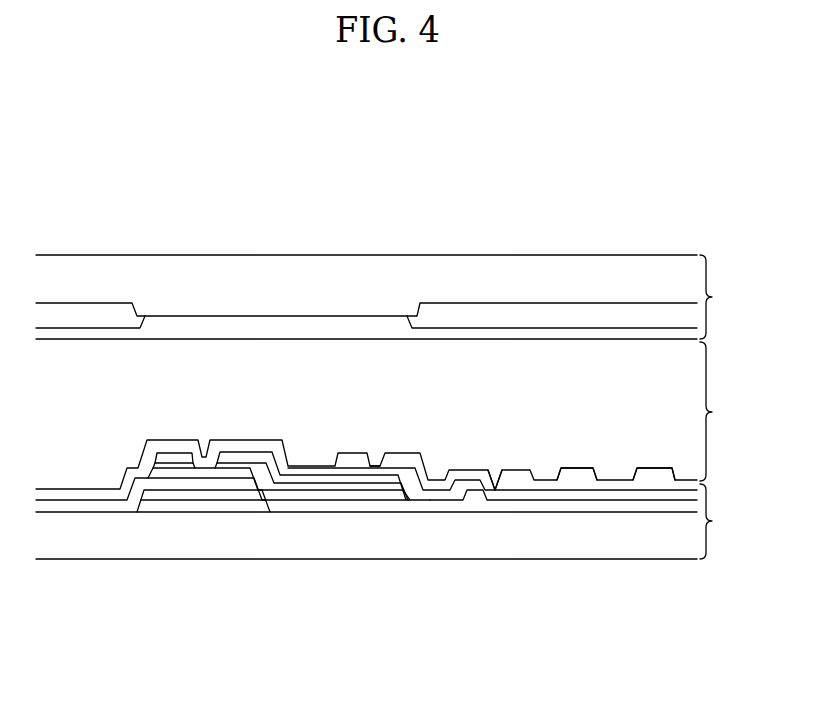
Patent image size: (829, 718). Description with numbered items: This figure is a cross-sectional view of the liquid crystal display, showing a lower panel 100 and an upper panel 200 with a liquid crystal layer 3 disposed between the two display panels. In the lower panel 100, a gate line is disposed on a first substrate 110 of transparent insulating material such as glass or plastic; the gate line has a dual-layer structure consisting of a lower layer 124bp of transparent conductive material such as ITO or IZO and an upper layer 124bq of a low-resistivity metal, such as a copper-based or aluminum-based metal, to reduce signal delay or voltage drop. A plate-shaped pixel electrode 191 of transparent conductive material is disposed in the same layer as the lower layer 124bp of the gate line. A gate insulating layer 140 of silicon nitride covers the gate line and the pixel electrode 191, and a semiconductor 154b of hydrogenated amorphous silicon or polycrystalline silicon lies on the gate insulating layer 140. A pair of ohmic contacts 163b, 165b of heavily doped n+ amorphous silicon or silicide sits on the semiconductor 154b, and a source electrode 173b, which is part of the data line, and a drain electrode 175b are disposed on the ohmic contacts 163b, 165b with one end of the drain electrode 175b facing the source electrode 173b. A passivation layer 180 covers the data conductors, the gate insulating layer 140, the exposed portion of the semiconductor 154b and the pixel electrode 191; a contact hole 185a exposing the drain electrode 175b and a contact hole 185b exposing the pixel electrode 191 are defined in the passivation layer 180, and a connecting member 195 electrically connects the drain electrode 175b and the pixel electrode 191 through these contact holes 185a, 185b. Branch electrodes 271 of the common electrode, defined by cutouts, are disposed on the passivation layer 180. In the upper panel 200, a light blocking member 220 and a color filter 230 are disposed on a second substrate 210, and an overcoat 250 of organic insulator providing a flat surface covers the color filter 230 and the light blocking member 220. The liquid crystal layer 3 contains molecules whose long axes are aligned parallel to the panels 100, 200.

The liquid crystal layer 3 is at (714, 411).
The lower panel 100 is at (726, 521).
The first substrate 110 is at (517, 538).
The lower layer of the gate line 124bp is at (194, 506).
The upper layer of the gate line 124bq is at (226, 495).
The gate insulating layer 140 is at (104, 507).
The semiconductor 154b is at (162, 472).
The ohmic contact 163b is at (162, 463).
The ohmic contact 165b is at (300, 488).
The source electrode 173b is at (182, 456).
The drain electrode 175b is at (350, 478).
The passivation layer 180 is at (59, 495).
The contact hole 185a is at (377, 467).
The contact hole 185b is at (503, 483).
The pixel electrode 191 is at (607, 507).
The connecting member 195 is at (462, 473).
The upper panel 200 is at (726, 297).
The second substrate 210 is at (556, 275).
The light blocking member 220 is at (232, 312).
The color filter 230 is at (95, 315).
The overcoat 250 is at (329, 327).
The branch electrodes 271 is at (653, 473).